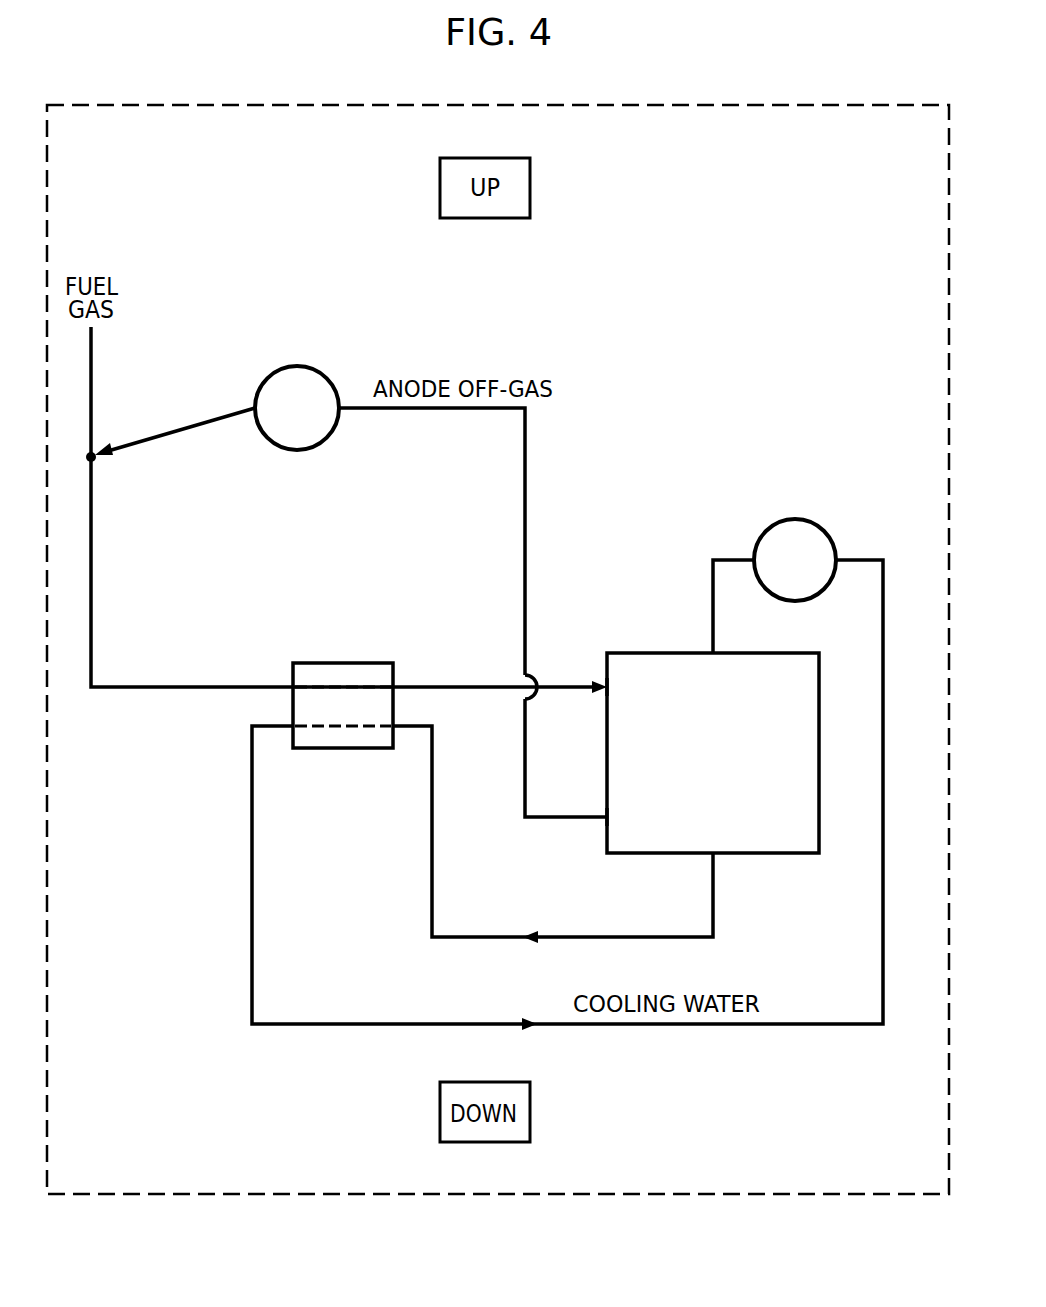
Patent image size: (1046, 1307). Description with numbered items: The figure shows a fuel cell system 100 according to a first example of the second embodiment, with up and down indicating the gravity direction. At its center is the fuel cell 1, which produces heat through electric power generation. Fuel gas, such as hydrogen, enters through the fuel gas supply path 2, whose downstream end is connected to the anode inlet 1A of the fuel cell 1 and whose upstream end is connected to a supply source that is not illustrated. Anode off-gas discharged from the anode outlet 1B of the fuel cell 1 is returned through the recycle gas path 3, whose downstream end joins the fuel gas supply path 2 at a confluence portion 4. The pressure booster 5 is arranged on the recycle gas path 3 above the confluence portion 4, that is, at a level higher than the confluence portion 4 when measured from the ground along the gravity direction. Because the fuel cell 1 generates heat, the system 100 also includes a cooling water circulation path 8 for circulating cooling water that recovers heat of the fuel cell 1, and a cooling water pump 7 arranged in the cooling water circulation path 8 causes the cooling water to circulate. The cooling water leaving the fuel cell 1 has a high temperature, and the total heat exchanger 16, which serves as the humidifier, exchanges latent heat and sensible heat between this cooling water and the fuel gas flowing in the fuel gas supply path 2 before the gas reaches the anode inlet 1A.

The fuel cell system 100 is at (637, 298).
The fuel cell 1 is at (722, 771).
The anode inlet 1A is at (620, 688).
The anode outlet 1B is at (620, 817).
The fuel gas supply path 2 is at (184, 690).
The recycle gas path 3 is at (355, 405).
The confluence portion 4 is at (93, 462).
The pressure booster 5 is at (307, 422).
The cooling water pump 7 is at (805, 574).
The cooling water circulation path 8 is at (884, 770).
The total heat exchanger 16 is at (340, 662).